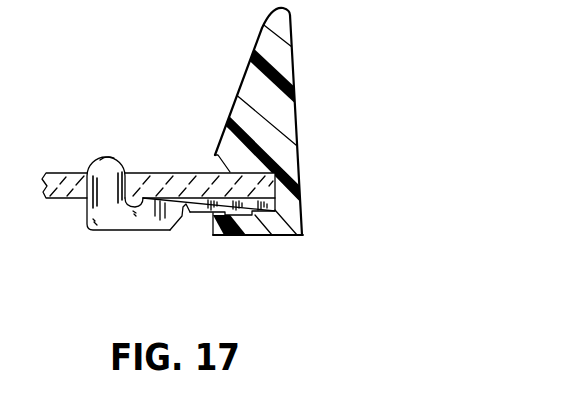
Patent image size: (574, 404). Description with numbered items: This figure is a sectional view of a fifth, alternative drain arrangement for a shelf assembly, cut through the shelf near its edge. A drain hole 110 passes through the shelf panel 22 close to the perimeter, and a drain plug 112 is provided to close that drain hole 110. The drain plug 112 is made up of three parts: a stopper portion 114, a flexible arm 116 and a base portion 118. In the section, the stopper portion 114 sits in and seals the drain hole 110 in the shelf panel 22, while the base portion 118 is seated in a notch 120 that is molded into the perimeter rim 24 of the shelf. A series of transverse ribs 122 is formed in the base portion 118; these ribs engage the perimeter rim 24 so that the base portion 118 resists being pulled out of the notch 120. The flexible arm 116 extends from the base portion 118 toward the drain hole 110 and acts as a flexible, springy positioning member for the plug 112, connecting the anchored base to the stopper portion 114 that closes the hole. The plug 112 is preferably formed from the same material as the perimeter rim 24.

The shelf panel 22 is at (205, 172).
The perimeter rim 24 is at (252, 98).
The drain hole 110 is at (78, 186).
The drain plug 112 is at (109, 238).
The stopper portion 114 is at (124, 157).
The flexible arm 116 is at (122, 218).
The base portion 118 is at (188, 213).
The notch 120 is at (277, 206).
The transverse ribs 122 is at (256, 213).